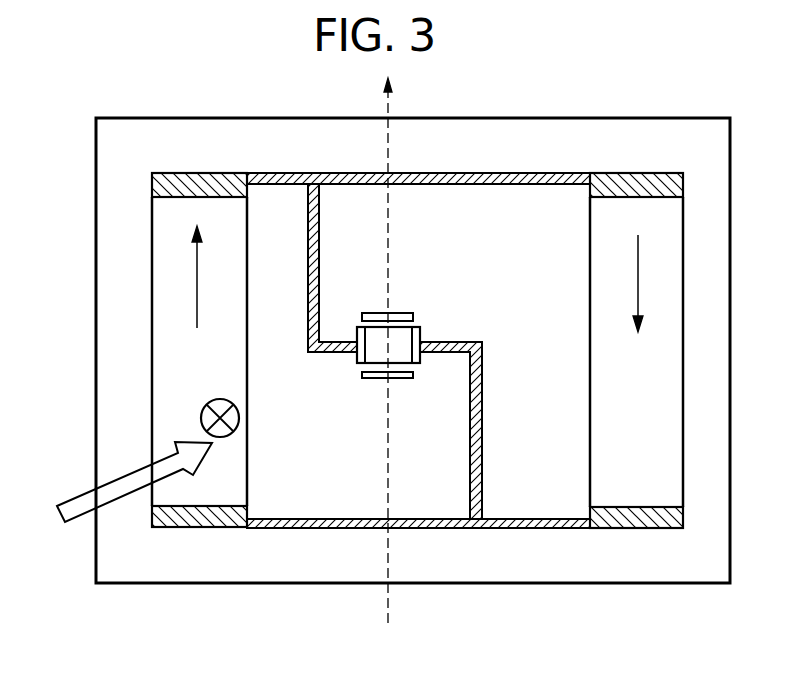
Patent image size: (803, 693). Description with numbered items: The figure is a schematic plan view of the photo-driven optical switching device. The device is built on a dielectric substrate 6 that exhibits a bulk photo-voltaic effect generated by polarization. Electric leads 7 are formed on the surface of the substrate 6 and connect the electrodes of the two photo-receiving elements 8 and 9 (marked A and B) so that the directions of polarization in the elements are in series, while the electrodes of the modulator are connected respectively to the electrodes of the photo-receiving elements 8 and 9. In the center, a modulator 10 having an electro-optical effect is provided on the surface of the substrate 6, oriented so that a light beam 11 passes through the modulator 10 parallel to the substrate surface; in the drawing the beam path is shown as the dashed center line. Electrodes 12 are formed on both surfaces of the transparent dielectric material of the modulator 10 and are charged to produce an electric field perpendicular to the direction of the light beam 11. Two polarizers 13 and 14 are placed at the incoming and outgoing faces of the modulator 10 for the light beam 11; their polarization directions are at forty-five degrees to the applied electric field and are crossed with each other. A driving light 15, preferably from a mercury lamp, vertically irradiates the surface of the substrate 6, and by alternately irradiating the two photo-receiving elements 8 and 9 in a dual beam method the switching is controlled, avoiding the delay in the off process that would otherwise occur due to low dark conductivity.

The dielectric substrate 6 is at (670, 565).
The electric leads 7 is at (523, 173).
The photo-receiving element 8 is at (199, 350).
The photo-receiving element 9 is at (636, 350).
The modulator 10 is at (398, 340).
The light beam 11 is at (393, 365).
The electrodes 12 is at (422, 331).
The polarizer 13 is at (372, 381).
The polarizer 14 is at (366, 311).
The driving light 15 is at (80, 497).